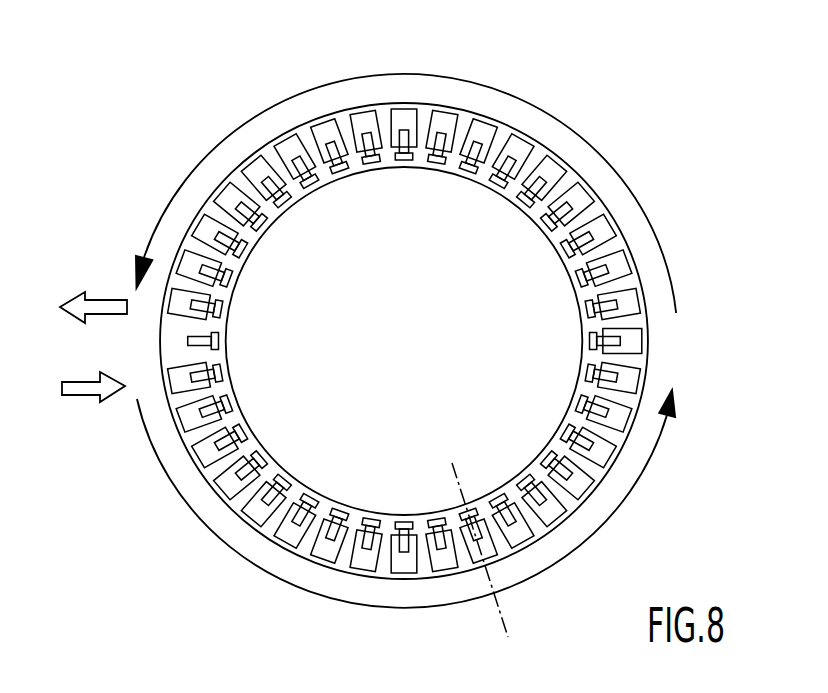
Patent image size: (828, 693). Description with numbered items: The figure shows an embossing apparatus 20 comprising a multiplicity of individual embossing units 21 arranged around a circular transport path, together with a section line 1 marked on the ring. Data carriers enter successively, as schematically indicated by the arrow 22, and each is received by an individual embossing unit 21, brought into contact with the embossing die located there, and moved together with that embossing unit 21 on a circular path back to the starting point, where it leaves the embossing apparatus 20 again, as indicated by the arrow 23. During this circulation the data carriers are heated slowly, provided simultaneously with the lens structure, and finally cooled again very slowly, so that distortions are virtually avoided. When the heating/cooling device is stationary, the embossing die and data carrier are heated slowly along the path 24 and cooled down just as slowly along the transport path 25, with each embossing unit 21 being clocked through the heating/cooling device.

The section line 1- 1 is at (473, 462).
The embossing apparatus 20 is at (151, 121).
The embossing unit 21 is at (568, 188).
The arrow 22 is at (105, 402).
The arrow 23 is at (70, 298).
The path 24 is at (233, 553).
The transport path 25 is at (308, 93).